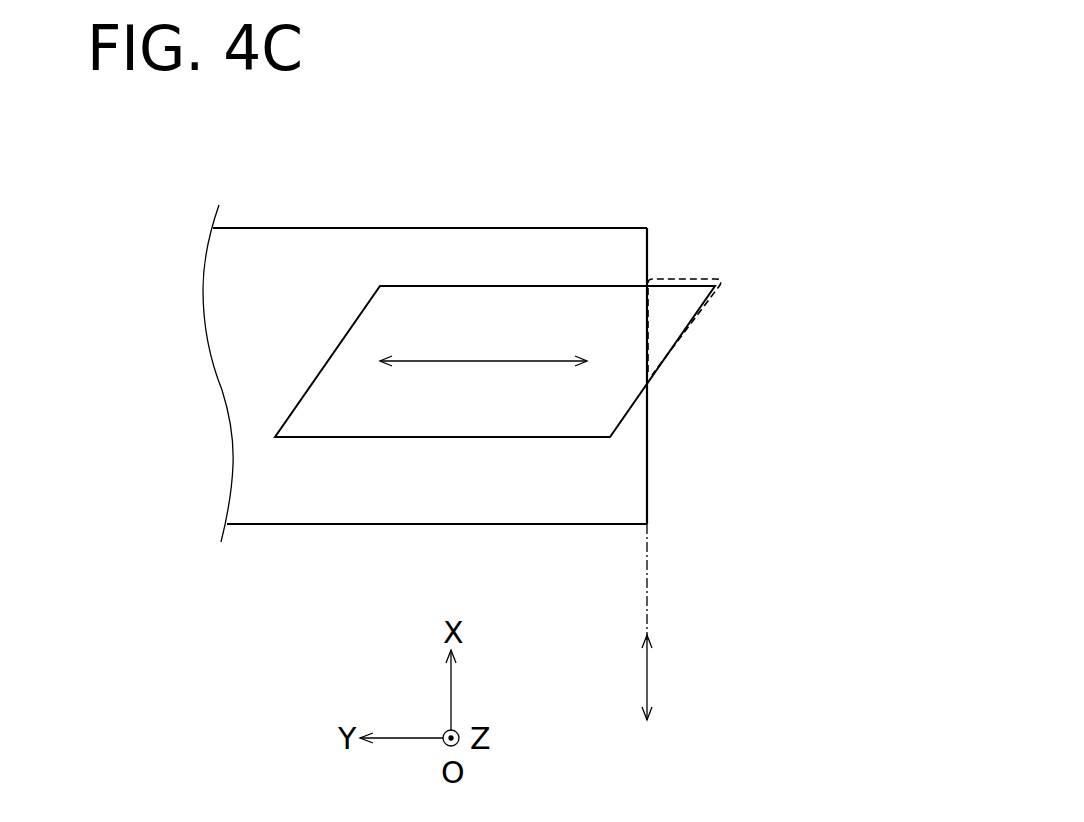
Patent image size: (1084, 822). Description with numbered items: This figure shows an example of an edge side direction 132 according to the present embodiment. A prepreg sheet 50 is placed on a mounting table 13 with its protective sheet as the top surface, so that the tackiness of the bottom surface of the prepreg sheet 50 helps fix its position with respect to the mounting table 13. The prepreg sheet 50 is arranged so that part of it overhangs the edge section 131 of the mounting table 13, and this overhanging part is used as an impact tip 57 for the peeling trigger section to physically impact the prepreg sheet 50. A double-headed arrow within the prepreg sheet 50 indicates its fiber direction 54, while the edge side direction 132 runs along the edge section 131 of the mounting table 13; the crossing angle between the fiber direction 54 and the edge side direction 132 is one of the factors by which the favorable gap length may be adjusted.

The mounting table 13 is at (527, 518).
The prepreg sheet 50 is at (338, 423).
The fiber direction 54 is at (483, 358).
The impact tip 57 is at (697, 278).
The edge section 131 is at (648, 495).
The edge side direction 132 is at (648, 685).